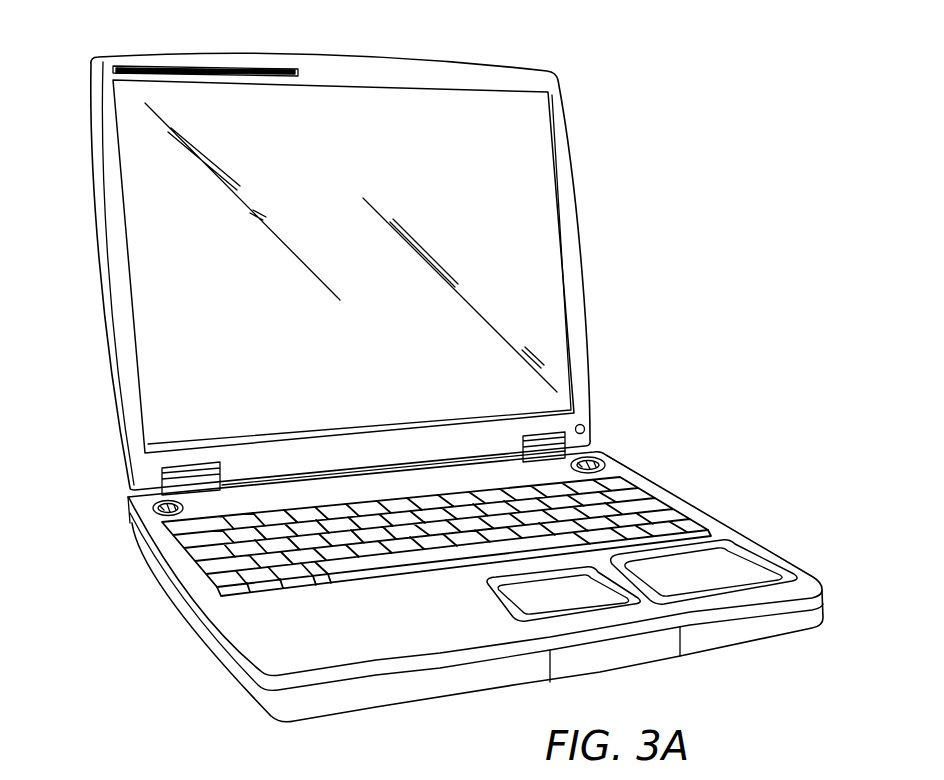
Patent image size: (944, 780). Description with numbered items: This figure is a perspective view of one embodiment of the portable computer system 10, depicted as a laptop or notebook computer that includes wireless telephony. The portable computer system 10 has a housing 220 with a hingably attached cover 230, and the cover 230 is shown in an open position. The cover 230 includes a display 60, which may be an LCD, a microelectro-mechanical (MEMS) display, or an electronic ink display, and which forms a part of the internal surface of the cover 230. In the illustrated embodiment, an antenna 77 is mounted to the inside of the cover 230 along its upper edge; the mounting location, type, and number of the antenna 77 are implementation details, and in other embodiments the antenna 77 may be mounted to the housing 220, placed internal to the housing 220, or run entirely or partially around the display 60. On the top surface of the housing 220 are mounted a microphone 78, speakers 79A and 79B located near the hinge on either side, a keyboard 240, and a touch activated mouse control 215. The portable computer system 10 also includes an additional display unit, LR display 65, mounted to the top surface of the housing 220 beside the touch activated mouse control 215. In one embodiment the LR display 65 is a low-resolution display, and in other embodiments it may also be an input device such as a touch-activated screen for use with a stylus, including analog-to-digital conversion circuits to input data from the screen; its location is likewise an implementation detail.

The portable computer system 10 is at (612, 100).
The display 60 is at (537, 240).
The LR display 65 is at (740, 568).
The antenna 77 is at (233, 72).
The microphone 78 is at (588, 424).
The speaker 79A is at (606, 461).
The speaker 79B is at (153, 507).
The touch activated mouse control 215 is at (522, 602).
The housing 220 is at (760, 628).
The cover 230 is at (354, 72).
The keyboard 240 is at (645, 506).